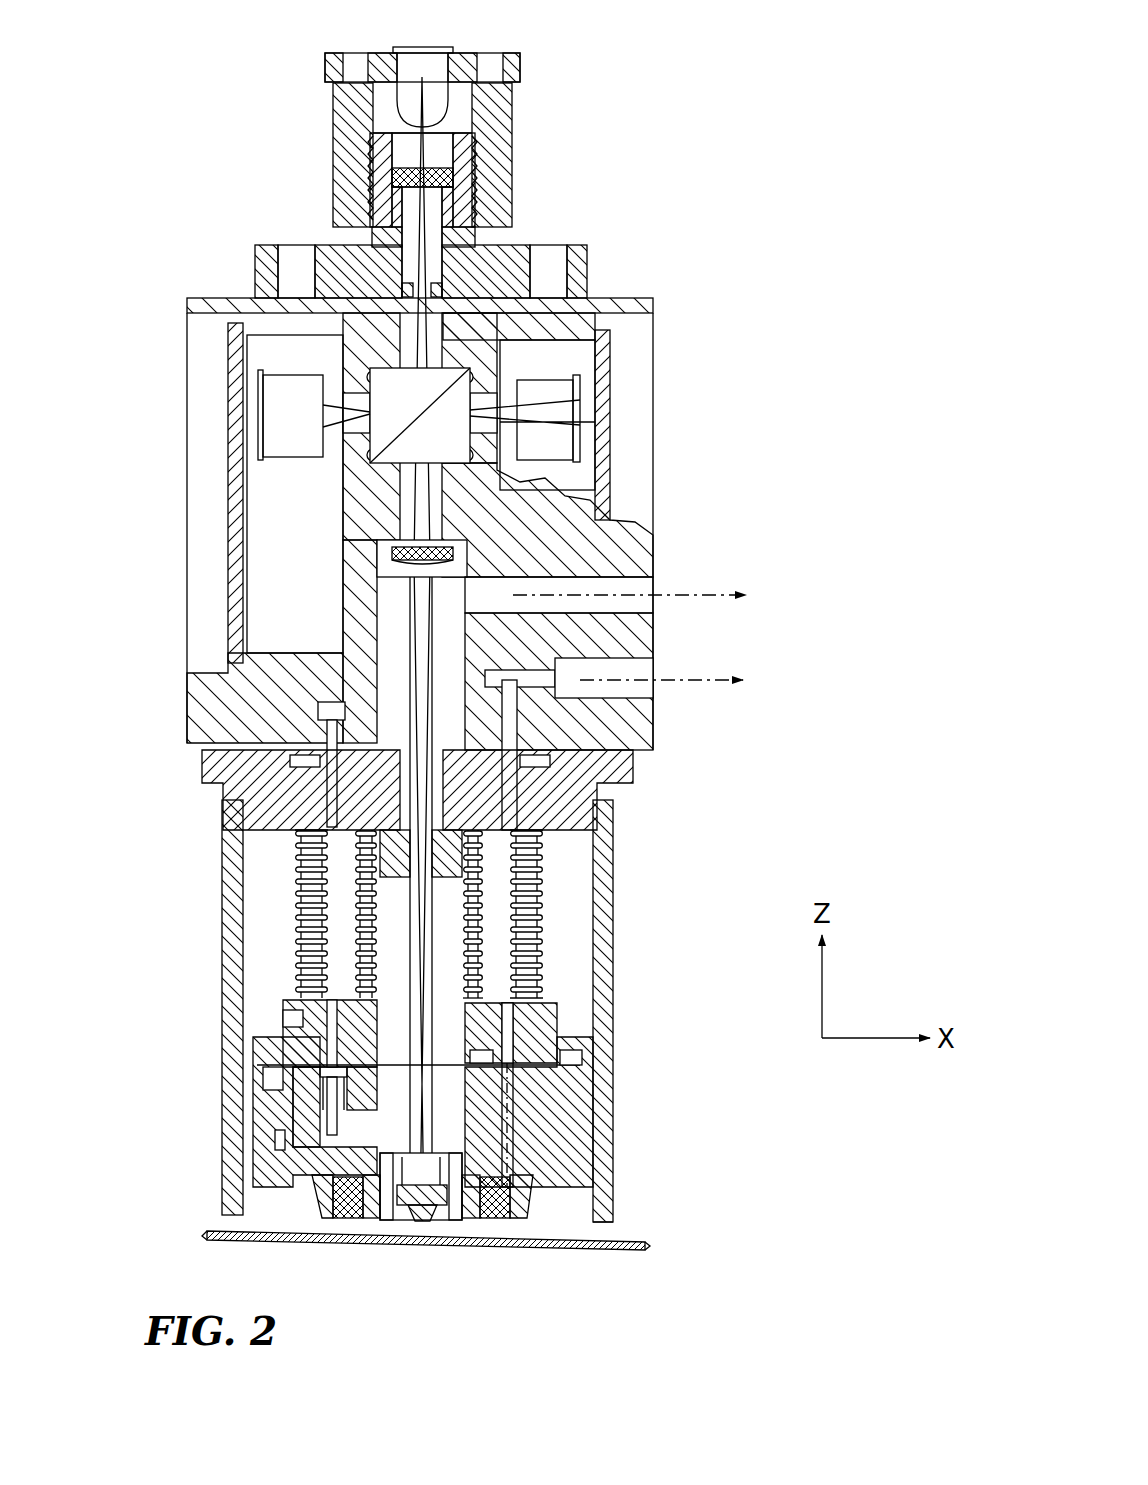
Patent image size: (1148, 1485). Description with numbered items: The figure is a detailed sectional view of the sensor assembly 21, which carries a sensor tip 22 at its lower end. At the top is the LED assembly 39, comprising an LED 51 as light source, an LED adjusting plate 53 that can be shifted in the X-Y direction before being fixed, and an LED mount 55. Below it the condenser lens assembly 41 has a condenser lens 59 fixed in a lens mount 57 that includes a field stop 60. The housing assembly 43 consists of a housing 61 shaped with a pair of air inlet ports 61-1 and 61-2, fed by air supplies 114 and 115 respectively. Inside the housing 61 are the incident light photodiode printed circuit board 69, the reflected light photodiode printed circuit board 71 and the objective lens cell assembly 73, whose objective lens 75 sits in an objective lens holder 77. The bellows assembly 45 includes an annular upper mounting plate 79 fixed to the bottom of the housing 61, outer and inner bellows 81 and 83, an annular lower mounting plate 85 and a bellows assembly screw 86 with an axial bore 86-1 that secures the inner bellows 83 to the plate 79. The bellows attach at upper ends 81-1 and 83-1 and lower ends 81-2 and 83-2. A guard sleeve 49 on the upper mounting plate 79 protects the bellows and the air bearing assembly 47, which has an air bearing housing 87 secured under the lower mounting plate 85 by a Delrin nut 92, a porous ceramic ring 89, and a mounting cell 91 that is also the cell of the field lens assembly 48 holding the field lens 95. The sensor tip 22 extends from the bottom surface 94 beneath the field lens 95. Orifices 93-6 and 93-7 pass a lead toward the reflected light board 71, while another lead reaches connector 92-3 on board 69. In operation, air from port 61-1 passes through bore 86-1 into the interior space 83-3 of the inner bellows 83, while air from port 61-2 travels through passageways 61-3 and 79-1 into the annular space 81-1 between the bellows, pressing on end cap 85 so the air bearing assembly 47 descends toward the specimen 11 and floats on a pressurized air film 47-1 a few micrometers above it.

The sensor assembly 21 is at (158, 609).
The LED 51 is at (393, 48).
The LED adjusting plate 53 is at (520, 66).
The LED assembly 39 is at (518, 118).
The LED mount 55 is at (512, 158).
The condenser lens 59 is at (400, 150).
The field stop 60 is at (440, 250).
The condenser lens assembly 41 is at (318, 243).
The lens mount 57 is at (590, 258).
The housing assembly 43 is at (183, 563).
The housing 61 is at (625, 548).
The objective lens 75 is at (600, 522).
The incident light photodiode printed circuit board 69 is at (247, 452).
The reflected light photodiode printed circuit board 71 is at (610, 483).
The objective lens holder 77 is at (395, 553).
The objective lens cell assembly 73 is at (387, 582).
The air inlet port 61-1 is at (655, 590).
The air inlet port 61-2 is at (655, 668).
The passageway 61-3 is at (522, 733).
The air supply 114 is at (728, 606).
The air supply 115 is at (760, 683).
The orifice 93-6 is at (320, 712).
The upper mounting plate 79 is at (210, 760).
The passageway 79-1 is at (633, 770).
The guard sleeve 49 is at (222, 1040).
The bellows assembly 45 is at (280, 999).
The upper end of inner bellows 83-1 is at (320, 840).
The inner bellows 83 is at (320, 880).
The lower end of inner bellows 83-2 is at (360, 925).
The upper end of outer bellows 81-1 is at (560, 840).
The outer bellows 81 is at (545, 878).
The bellows assembly screw 86 is at (548, 915).
The axial bore 86-1 is at (525, 958).
The lower end of outer bellows 81-2 is at (560, 1000).
The lower mounting plate 85 is at (560, 1012).
The interior space 83-3 is at (450, 1118).
The orifice 93-7 is at (512, 1025).
The air bearing housing 87 is at (300, 1120).
The Delrin nut 92 is at (560, 1108).
The connector 92-3 is at (325, 1082).
The air bearing assembly 47 is at (555, 1148).
The air film 47-1 is at (540, 1228).
The field lens assembly 48 is at (400, 1218).
The mounting cell 91 is at (385, 1215).
The sensor tip 22 is at (425, 1212).
The field lens 95 is at (415, 1215).
The ring 89 is at (345, 1212).
The bottom surface 94 is at (520, 1222).
The specimen 11 is at (640, 1245).